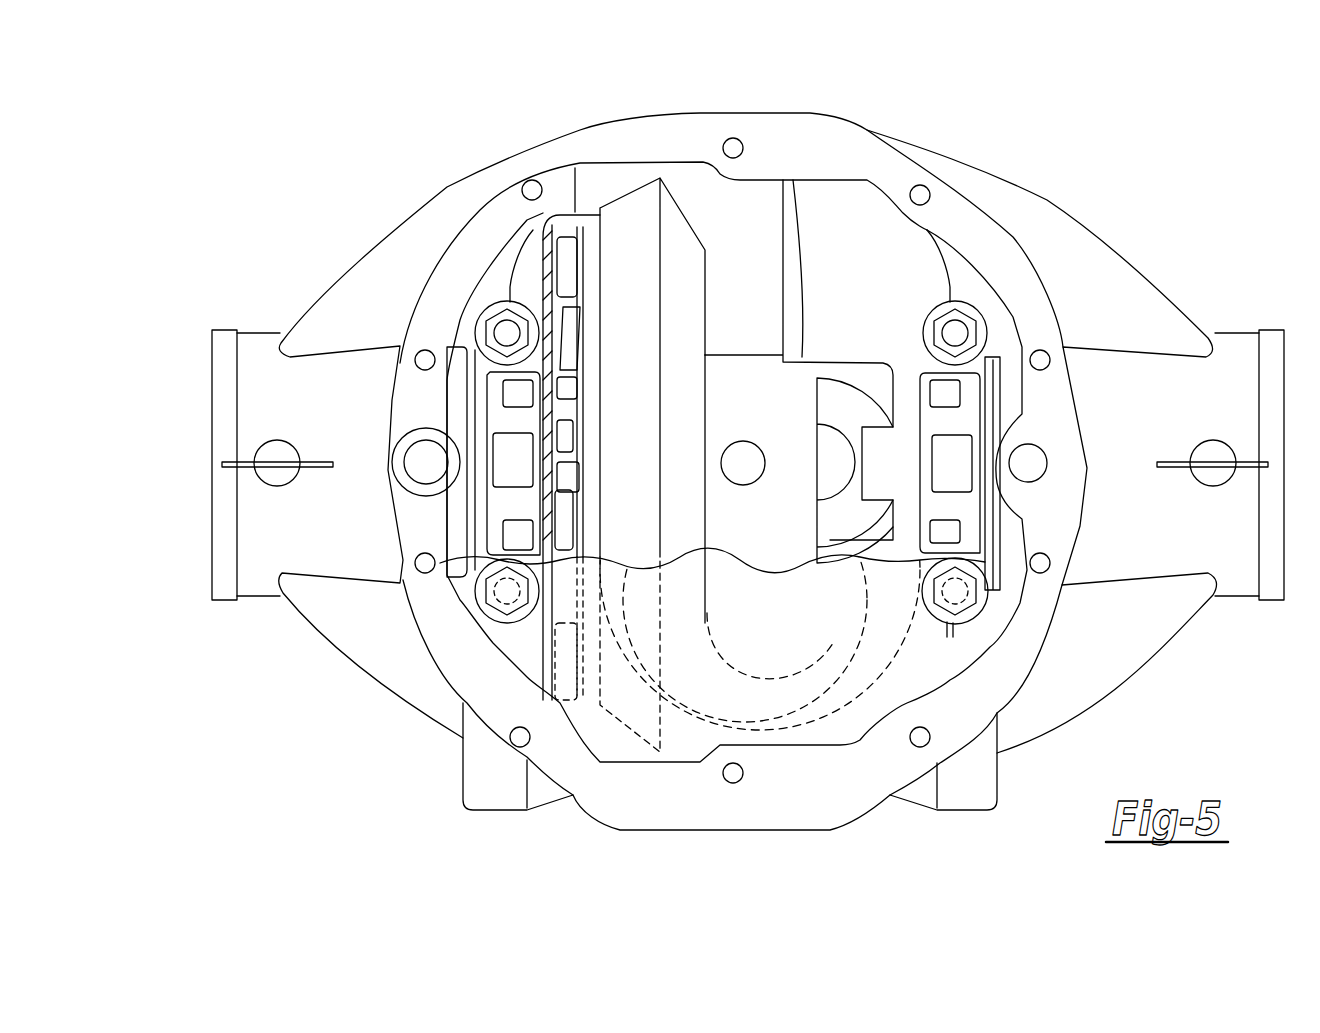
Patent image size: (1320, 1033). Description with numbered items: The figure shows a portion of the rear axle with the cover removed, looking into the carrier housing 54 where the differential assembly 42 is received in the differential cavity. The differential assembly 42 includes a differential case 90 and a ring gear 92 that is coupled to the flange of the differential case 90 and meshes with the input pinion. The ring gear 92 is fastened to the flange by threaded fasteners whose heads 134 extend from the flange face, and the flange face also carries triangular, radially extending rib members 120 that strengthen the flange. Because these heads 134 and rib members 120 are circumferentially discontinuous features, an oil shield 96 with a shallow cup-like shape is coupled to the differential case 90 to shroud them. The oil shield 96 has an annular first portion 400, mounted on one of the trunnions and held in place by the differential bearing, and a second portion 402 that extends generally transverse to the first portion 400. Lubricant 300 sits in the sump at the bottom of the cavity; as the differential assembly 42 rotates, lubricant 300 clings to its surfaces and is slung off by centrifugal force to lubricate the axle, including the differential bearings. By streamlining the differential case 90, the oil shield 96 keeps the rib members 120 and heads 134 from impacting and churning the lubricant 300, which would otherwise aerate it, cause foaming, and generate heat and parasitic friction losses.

The differential assembly 42 is at (745, 217).
The carrier housing 54 is at (1128, 273).
The differential case 90 is at (790, 375).
The ring gear 92 is at (640, 200).
The oil shield 96 is at (535, 263).
The radially extending rib members 120 is at (570, 335).
The heads of the threaded fasteners 134 is at (563, 520).
The lubricant 300 is at (977, 620).
The first portion 400 is at (525, 288).
The second portion 402 is at (575, 195).